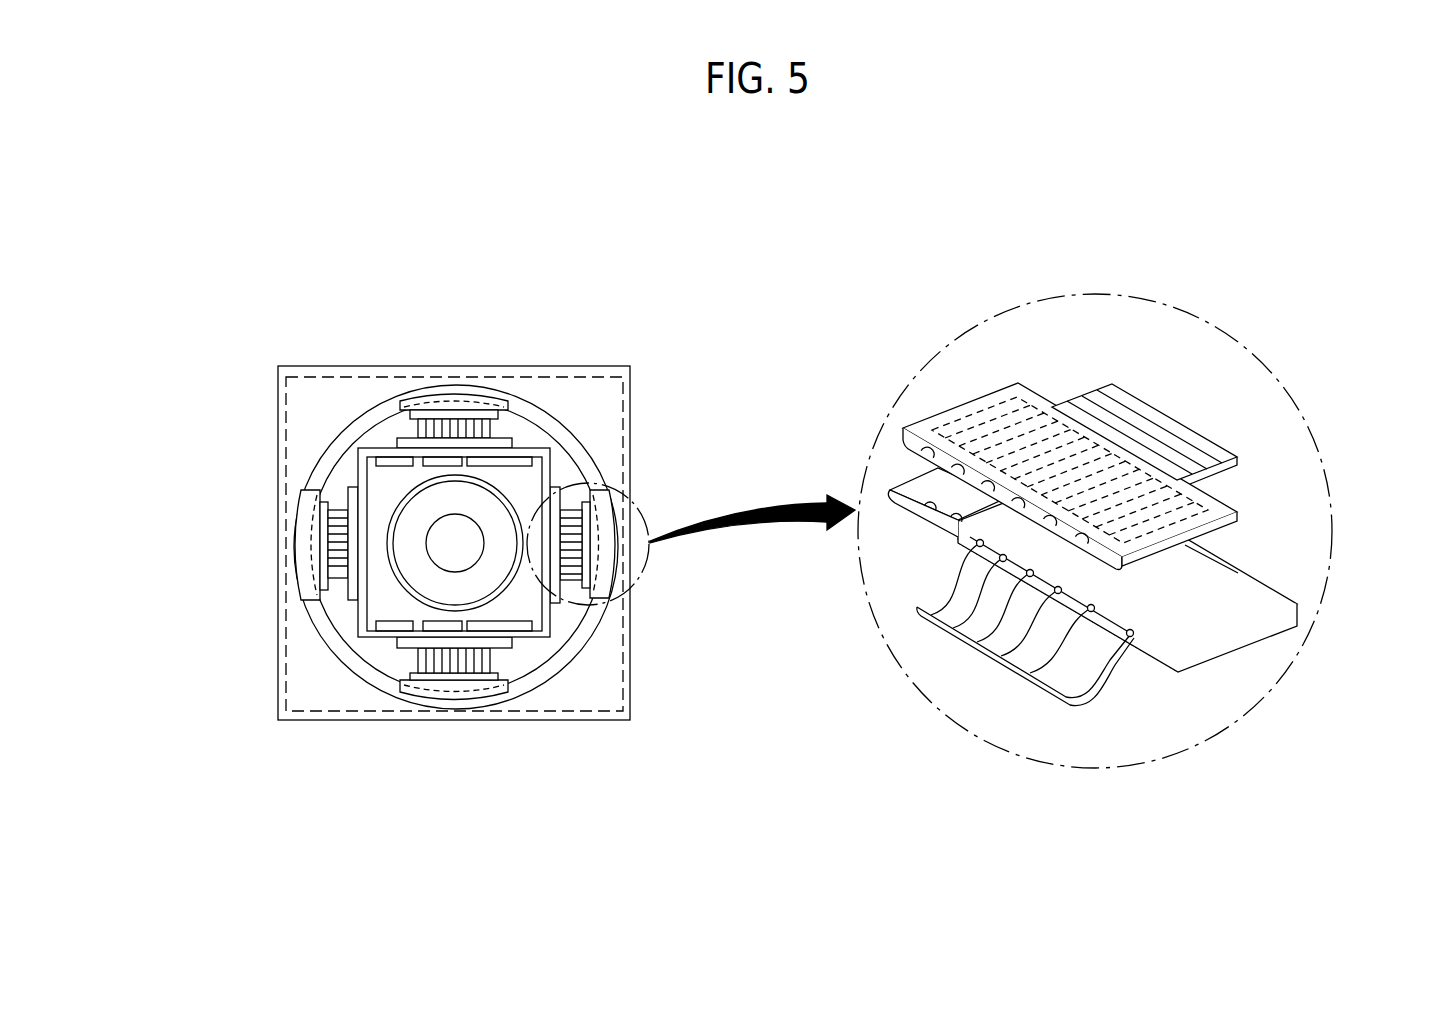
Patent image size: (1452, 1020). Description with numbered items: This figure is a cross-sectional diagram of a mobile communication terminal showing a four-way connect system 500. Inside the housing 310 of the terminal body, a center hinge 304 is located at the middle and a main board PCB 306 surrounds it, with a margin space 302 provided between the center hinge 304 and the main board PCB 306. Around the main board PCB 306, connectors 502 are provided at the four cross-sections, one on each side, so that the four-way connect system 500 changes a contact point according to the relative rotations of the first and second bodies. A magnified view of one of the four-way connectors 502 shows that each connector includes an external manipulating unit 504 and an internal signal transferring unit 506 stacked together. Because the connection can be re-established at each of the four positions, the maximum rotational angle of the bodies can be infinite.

The 4-way connect system 500 is at (532, 238).
The housing 310 is at (362, 366).
The main board PCB 306 is at (530, 447).
The margin space 302 is at (383, 596).
The center hinge 304 is at (438, 573).
The 4-way connector 502 is at (292, 544).
The external manipulating unit 504 is at (1157, 407).
The internal signal transferring unit 506 is at (999, 656).